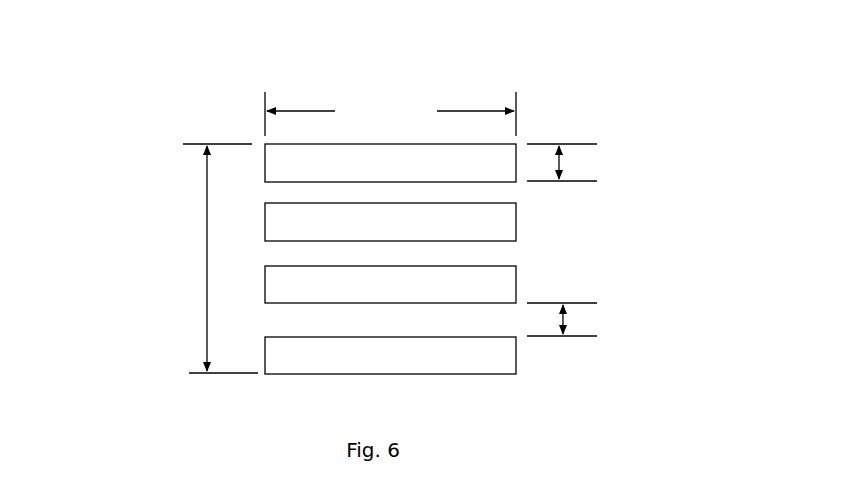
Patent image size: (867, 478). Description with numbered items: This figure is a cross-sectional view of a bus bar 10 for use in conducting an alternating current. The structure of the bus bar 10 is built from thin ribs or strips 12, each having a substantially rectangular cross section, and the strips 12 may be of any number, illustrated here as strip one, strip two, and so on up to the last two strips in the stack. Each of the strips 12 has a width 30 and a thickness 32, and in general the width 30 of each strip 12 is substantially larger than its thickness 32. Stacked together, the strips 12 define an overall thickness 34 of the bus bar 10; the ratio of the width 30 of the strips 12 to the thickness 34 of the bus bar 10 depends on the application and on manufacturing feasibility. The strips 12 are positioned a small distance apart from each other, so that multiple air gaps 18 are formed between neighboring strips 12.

The bus bar 10 is at (658, 98).
The strips 12 is at (280, 352).
The air gaps 18 is at (625, 319).
The width 30 is at (390, 105).
The thickness 32 is at (639, 162).
The thickness of the bus bar 34 is at (177, 258).